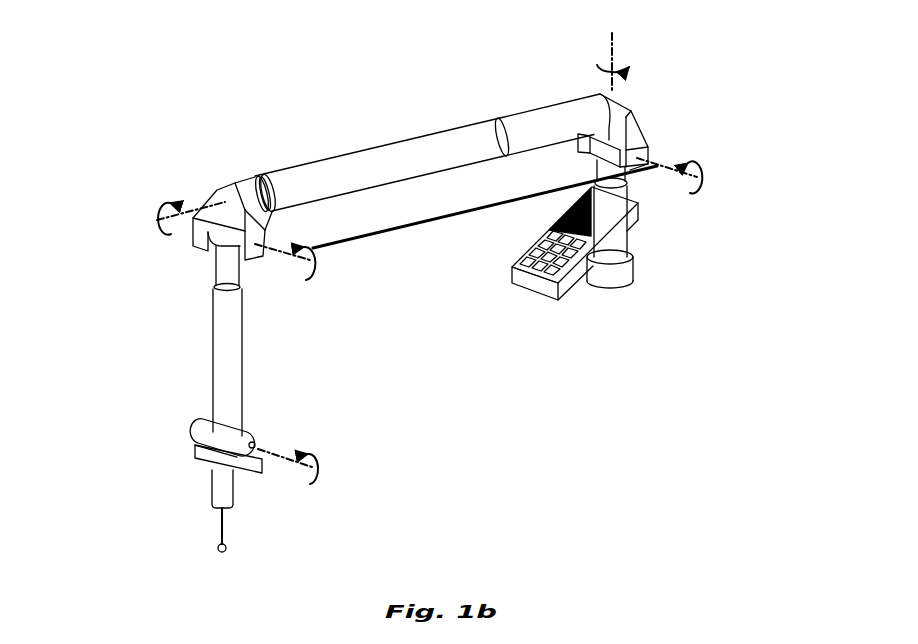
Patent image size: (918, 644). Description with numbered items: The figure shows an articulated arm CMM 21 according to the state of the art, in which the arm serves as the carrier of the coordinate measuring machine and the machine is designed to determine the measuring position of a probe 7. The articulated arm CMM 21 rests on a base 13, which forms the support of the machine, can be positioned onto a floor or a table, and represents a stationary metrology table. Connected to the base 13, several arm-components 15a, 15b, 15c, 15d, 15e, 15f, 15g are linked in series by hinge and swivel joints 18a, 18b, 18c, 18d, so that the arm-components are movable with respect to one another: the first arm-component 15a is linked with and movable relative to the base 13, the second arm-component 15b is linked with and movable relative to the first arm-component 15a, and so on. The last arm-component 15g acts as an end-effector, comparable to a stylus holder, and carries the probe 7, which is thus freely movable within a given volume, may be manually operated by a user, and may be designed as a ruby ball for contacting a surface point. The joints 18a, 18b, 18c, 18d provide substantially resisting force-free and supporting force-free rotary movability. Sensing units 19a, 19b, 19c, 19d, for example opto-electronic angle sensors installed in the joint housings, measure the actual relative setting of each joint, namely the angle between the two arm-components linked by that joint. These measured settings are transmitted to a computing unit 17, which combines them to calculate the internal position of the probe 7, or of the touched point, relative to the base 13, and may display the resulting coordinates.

The articulated arm CMM 21 is at (418, 146).
The first arm-component 15a is at (628, 184).
The second arm-component 15b is at (560, 125).
The arm-component 15c is at (415, 158).
The arm-component 15d is at (227, 201).
The arm-component 15e is at (228, 270).
The arm-component 15f is at (230, 347).
The last arm-component 15g is at (218, 488).
The hinge and swivel joint 18a is at (576, 140).
The sensing unit 19a is at (556, 161).
The hinge and swivel joint 18b is at (263, 178).
The sensing unit 19b is at (235, 167).
The hinge and swivel joint 18c is at (255, 244).
The sensing unit 19c is at (313, 232).
The hinge and swivel joint 18d is at (260, 442).
The sensing unit 19d is at (287, 437).
The base 13 is at (618, 245).
The computing unit 17 is at (547, 292).
The probe 7 is at (217, 537).